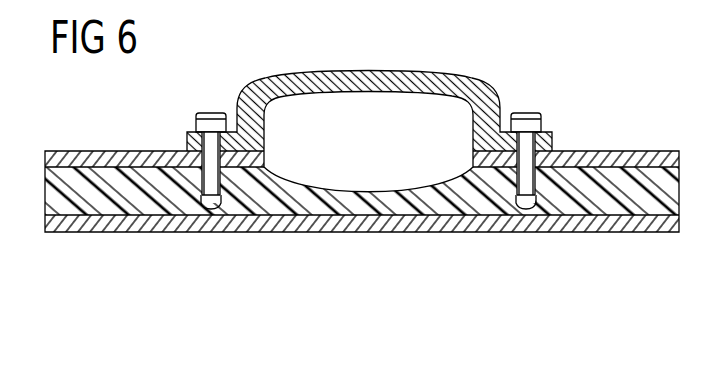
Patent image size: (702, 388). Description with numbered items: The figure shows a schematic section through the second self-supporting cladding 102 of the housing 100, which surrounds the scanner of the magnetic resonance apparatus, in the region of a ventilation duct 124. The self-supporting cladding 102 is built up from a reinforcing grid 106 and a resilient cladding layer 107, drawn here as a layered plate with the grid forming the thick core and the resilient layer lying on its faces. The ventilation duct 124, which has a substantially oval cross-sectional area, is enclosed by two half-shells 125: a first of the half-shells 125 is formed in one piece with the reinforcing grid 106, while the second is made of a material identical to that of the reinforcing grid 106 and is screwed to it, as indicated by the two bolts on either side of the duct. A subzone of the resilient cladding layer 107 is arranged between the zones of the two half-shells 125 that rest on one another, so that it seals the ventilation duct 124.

The housing 100 is at (362, 173).
The second self-supporting cladding 102 is at (362, 207).
The reinforcing grid 106 is at (362, 157).
The resilient cladding layer 107 is at (472, 262).
The ventilation duct 124 is at (385, 106).
The half-shells 125 is at (369, 102).